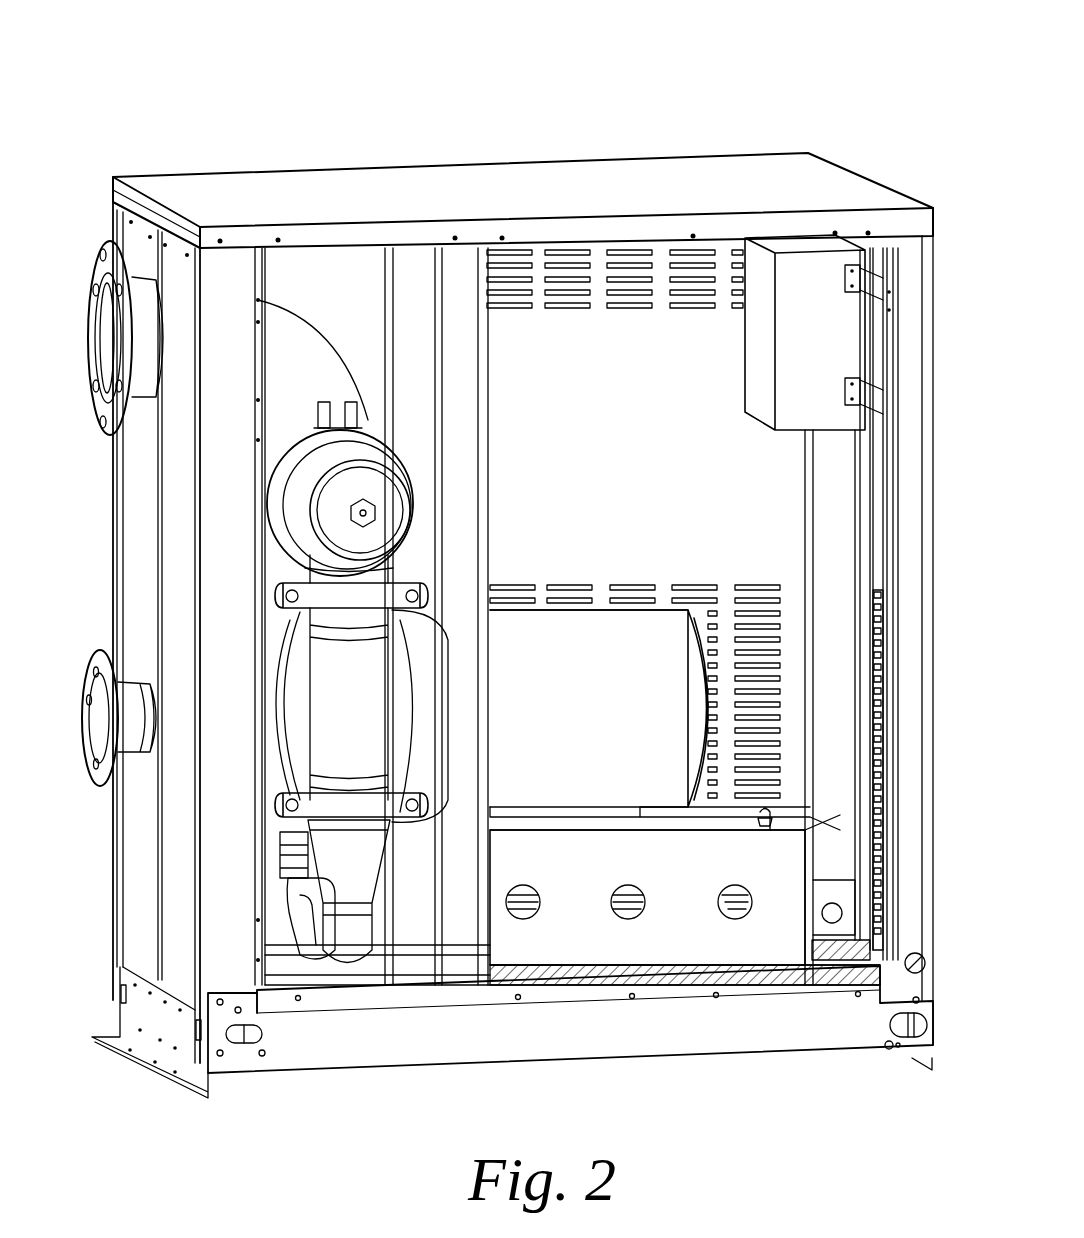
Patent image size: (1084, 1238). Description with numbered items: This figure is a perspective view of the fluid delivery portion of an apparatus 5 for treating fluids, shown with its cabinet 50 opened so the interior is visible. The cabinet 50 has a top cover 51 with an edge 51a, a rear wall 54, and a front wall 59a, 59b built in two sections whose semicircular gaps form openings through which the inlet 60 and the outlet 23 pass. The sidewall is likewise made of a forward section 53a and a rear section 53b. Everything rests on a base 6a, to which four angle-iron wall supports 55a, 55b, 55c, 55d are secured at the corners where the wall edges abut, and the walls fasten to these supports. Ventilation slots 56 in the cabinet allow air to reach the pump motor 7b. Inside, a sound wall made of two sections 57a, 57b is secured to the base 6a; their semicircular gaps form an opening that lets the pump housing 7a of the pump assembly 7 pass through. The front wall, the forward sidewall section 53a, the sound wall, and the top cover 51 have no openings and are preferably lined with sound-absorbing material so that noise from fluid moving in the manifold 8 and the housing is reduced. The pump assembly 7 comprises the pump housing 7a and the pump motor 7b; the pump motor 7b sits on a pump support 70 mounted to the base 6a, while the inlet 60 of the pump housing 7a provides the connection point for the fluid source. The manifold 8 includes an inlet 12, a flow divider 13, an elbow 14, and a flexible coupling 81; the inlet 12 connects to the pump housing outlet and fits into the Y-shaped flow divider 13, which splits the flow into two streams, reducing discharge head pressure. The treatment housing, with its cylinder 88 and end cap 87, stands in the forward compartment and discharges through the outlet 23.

The cabinet 50 is at (358, 140).
The top cover 51 is at (543, 178).
The top cover lip 51a is at (125, 205).
The outlet 23 is at (102, 270).
The sound wall section 57b is at (418, 262).
The forward section of sidewall 53a is at (313, 353).
The apparatus for treating fluids 5 is at (298, 408).
The sound wall section 57a is at (490, 430).
The rear section of sidewall 53b is at (615, 349).
The end cap 87 is at (386, 480).
The cylinder 88 is at (300, 468).
The wall support 55a is at (236, 616).
The wall support 55d is at (118, 515).
The front wall section 59a is at (135, 533).
The front wall section 59b is at (163, 590).
The pump housing 7a is at (295, 660).
The flexible coupling 81 is at (349, 704).
The pump motor 7b is at (605, 620).
The ventilation slots 56 is at (682, 590).
The wall support 55c is at (820, 448).
The rear wall 54 is at (872, 485).
The wall support 55b is at (905, 535).
The pump assembly 7 is at (599, 676).
The manifold 8 is at (300, 760).
The inlet 12 is at (312, 882).
The flow divider 13 is at (312, 922).
The elbow 14 is at (352, 950).
The inlet 60 is at (100, 775).
The pump support 70 is at (665, 890).
The base 6a is at (570, 1019).